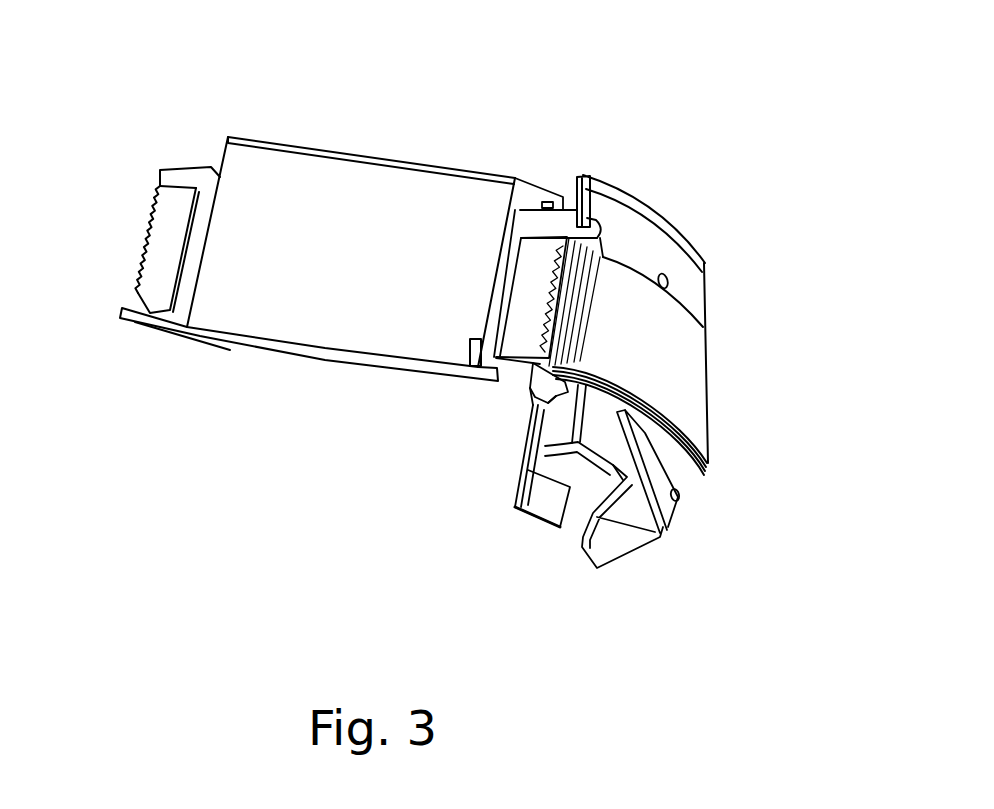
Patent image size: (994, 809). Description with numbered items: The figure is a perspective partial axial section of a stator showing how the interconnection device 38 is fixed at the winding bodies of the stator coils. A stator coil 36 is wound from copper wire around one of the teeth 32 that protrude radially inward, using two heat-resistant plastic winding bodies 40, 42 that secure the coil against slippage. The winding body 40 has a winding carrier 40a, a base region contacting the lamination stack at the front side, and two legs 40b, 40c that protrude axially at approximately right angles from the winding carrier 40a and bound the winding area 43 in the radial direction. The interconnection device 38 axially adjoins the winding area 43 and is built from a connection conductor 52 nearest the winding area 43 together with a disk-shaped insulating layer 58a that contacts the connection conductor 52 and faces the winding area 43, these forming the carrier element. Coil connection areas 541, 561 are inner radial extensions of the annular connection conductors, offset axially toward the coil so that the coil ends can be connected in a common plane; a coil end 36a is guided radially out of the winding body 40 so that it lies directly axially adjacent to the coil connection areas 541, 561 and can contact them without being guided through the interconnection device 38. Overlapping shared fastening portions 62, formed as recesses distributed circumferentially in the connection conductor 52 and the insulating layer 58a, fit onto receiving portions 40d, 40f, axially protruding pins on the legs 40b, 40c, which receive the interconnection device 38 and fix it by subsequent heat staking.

The teeth 32 is at (250, 283).
The stator coil 36 is at (157, 207).
The coil end 36a is at (517, 505).
The interconnection device 38 is at (733, 338).
The winding body 40 is at (468, 397).
The winding carrier 40a is at (503, 297).
The leg 40b is at (521, 374).
The leg 40c is at (525, 225).
The receiving portion 40d is at (603, 232).
The receiving portion 40f is at (545, 393).
The winding body 42 is at (182, 178).
The winding area 43 is at (530, 290).
The connection conductor 52 is at (648, 247).
The insulating layer 58a is at (680, 240).
The shared fastening portion 62 is at (585, 221).
The coil connection area 541 is at (602, 540).
The coil connection area 561 is at (538, 498).